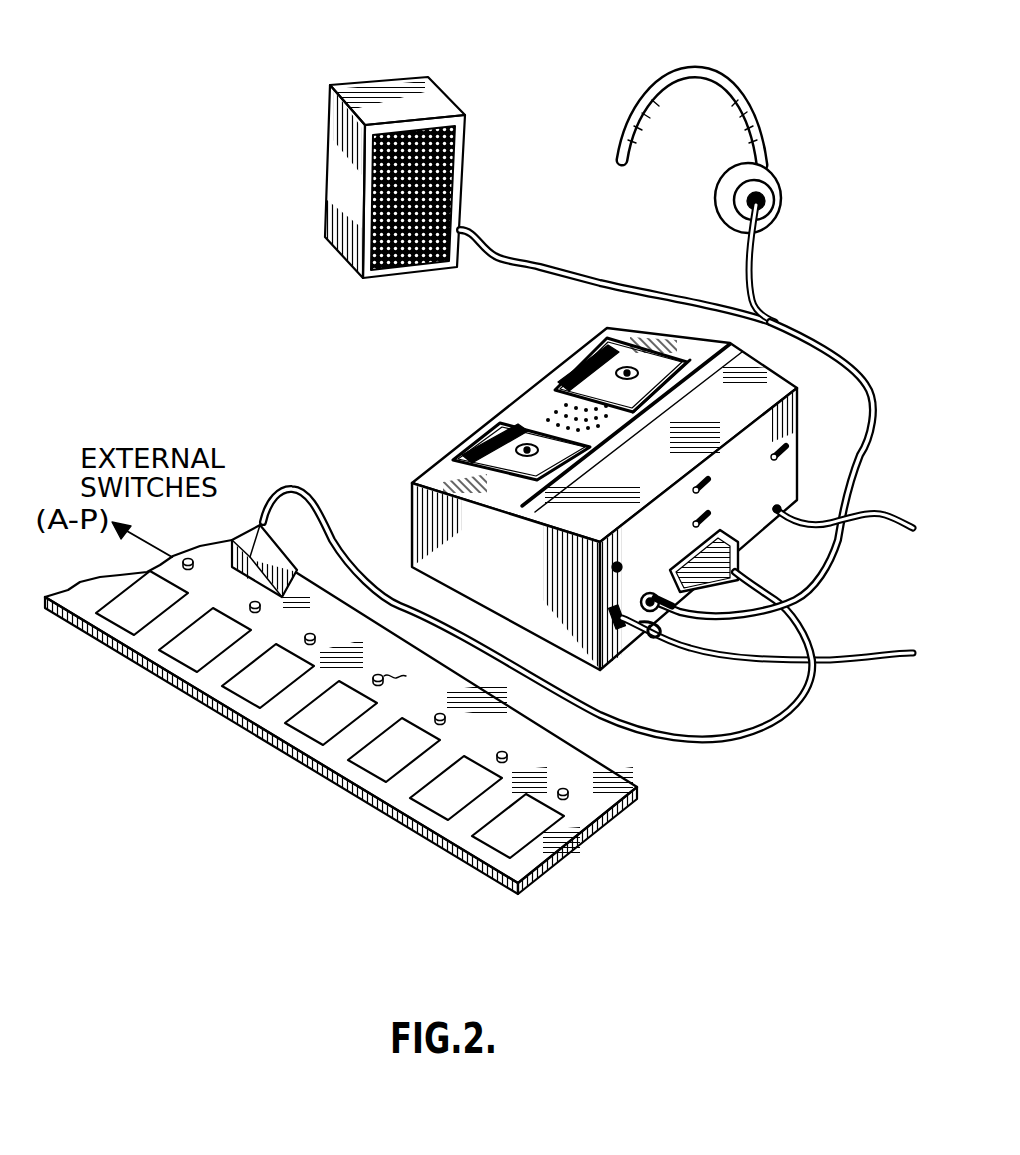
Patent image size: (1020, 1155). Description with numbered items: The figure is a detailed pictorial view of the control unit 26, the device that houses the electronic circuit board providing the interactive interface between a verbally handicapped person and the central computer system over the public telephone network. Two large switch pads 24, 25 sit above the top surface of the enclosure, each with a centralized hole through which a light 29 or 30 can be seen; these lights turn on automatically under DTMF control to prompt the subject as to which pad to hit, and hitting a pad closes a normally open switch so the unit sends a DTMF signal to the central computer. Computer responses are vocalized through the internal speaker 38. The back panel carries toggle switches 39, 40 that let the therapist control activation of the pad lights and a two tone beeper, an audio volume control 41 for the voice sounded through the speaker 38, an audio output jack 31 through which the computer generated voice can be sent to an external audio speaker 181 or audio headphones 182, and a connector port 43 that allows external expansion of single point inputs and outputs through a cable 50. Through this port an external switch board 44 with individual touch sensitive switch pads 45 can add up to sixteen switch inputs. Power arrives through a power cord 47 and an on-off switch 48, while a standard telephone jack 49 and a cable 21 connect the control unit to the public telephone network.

The external audio speaker 181 is at (447, 90).
The audio headphones 182 is at (780, 183).
The light 29 is at (626, 372).
The light 30 is at (527, 448).
The switch pad 24 is at (672, 385).
The speaker 38 is at (600, 412).
The switch pad 25 is at (574, 456).
The control unit 26 is at (798, 406).
The on-off switch 48 is at (785, 447).
The toggle switch 39 is at (705, 482).
The toggle switch 40 is at (707, 516).
The audio volume control 41 is at (618, 565).
The telephone jack 49 is at (650, 596).
The connector port 43 is at (740, 545).
The power cord 47 is at (898, 520).
The audio output jack 31 is at (640, 630).
The cable 21 is at (755, 668).
The cable 50 is at (727, 752).
The touch sensitive switch pad 45 is at (522, 807).
The external switch board 44 is at (351, 709).